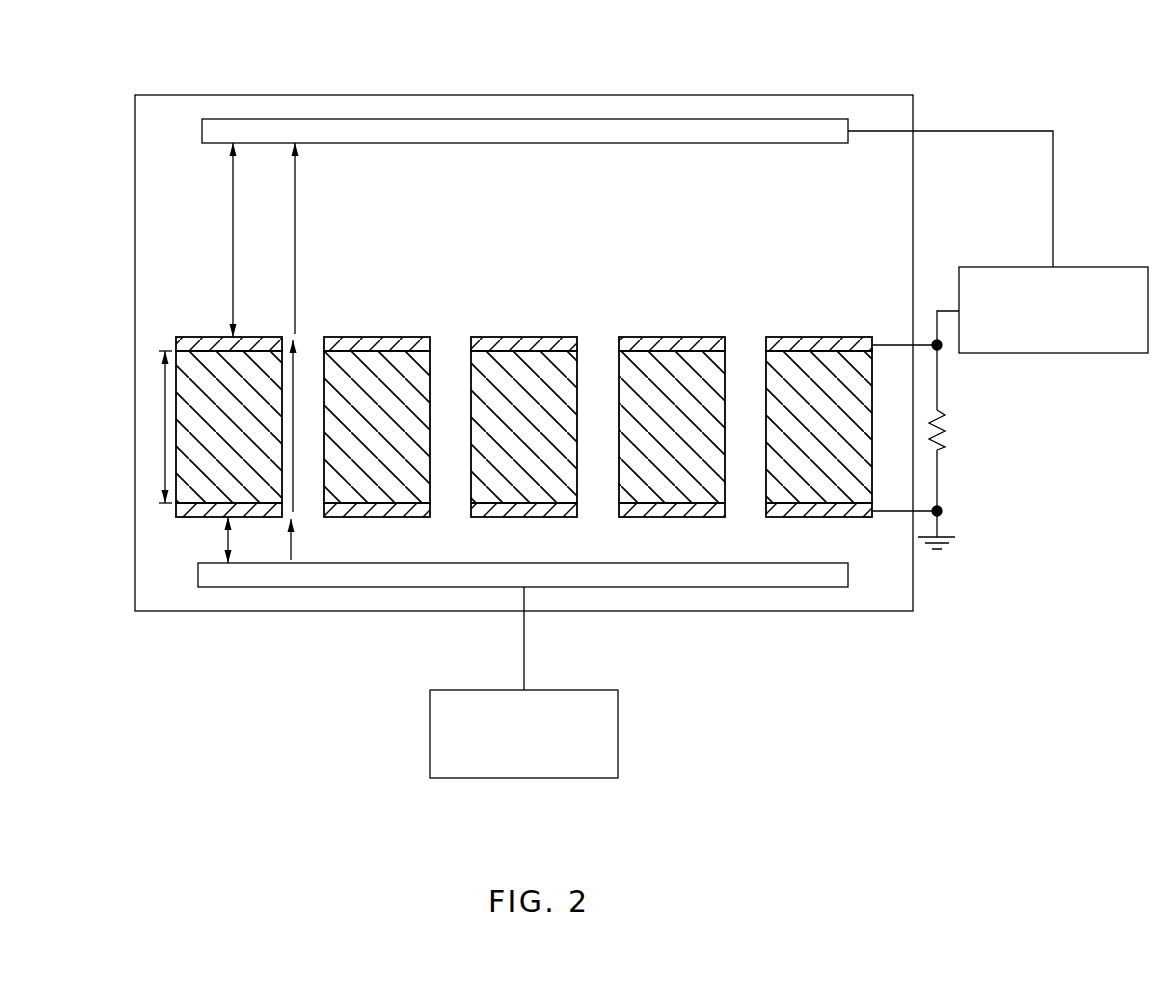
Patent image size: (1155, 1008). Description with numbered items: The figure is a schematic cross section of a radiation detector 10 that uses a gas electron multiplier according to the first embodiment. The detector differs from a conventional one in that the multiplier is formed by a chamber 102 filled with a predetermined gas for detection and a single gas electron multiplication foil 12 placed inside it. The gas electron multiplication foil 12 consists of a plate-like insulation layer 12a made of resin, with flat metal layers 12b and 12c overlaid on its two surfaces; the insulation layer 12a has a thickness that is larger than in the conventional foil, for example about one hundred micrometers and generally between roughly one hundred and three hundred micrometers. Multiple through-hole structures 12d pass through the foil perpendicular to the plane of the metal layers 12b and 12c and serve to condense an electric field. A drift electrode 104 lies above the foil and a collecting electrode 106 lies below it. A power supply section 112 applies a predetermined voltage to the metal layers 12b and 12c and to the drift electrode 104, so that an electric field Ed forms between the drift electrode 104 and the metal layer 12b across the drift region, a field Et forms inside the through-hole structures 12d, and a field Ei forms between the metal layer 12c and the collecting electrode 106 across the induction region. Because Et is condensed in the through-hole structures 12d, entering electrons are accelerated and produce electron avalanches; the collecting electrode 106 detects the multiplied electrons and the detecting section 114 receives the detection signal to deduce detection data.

The radiation detector 10 is at (656, 55).
The gas electron multiplication foil 12 is at (855, 393).
The insulation layer 12a is at (772, 410).
The metal layer 12b is at (824, 342).
The metal layer 12c is at (837, 514).
The through-hole structures 12d is at (600, 352).
The chamber 102 is at (915, 108).
The drift electrode 104 is at (808, 128).
The collecting electrode 106 is at (800, 583).
The power supply section 112 is at (1104, 340).
The detecting section 114 is at (605, 736).